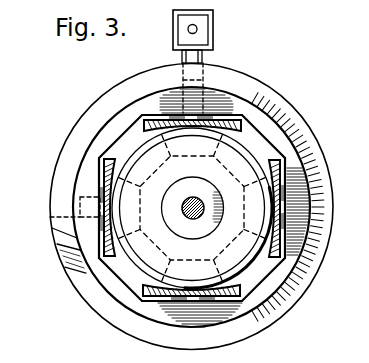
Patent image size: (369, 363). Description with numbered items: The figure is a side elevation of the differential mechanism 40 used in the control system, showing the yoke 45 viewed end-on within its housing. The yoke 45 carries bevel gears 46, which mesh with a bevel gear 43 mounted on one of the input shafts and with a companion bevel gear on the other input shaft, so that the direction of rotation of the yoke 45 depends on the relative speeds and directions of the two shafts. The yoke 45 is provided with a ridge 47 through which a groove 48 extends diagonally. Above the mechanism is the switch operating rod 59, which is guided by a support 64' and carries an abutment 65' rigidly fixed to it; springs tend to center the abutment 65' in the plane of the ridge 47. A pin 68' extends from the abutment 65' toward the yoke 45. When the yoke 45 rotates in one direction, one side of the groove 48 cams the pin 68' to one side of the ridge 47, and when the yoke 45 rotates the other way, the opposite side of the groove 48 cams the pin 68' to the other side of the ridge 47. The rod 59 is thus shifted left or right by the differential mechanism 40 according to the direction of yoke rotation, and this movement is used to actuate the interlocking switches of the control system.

The differential mechanism 40 is at (191, 206).
The bevel gear 43 is at (128, 277).
The yoke 45 is at (318, 242).
The bevel gears 46 is at (146, 118).
The ridge 47 is at (323, 270).
The groove 48 is at (58, 245).
The switch operating rod 59 is at (188, 32).
The support 64' is at (213, 30).
The abutment 65' is at (210, 26).
The pin 68' is at (215, 81).